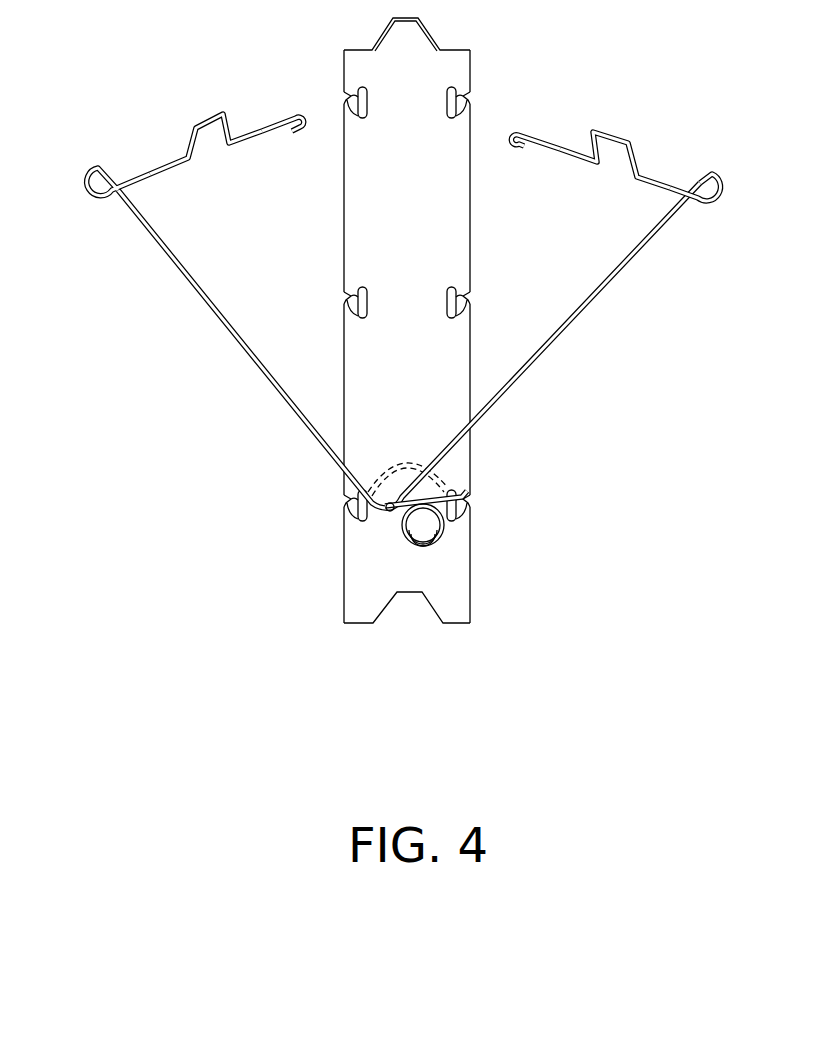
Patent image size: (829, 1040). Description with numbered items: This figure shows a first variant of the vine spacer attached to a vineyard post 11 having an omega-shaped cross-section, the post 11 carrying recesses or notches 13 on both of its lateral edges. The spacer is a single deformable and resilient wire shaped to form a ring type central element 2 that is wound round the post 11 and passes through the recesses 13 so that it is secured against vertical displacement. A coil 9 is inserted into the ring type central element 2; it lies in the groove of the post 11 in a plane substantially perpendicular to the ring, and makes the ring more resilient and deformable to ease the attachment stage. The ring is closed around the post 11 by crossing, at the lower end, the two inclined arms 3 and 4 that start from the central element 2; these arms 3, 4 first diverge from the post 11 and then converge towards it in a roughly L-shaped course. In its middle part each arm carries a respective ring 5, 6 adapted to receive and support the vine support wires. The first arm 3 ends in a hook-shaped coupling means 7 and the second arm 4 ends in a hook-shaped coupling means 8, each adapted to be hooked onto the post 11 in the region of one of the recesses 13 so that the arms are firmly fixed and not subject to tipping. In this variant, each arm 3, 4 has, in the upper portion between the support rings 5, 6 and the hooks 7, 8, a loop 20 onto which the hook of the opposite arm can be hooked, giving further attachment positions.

The ring type central element 2 is at (408, 458).
The first arm 3 is at (242, 343).
The second arm 4 is at (548, 343).
The ring 5 is at (92, 163).
The ring 6 is at (707, 177).
The hook-shaped coupling means 7 is at (297, 113).
The hook-shaped coupling means 8 is at (515, 128).
The coil 9 is at (433, 538).
The vineyard post 11 is at (471, 201).
The recesses or notches 13 is at (465, 497).
The loop 20 is at (212, 117).